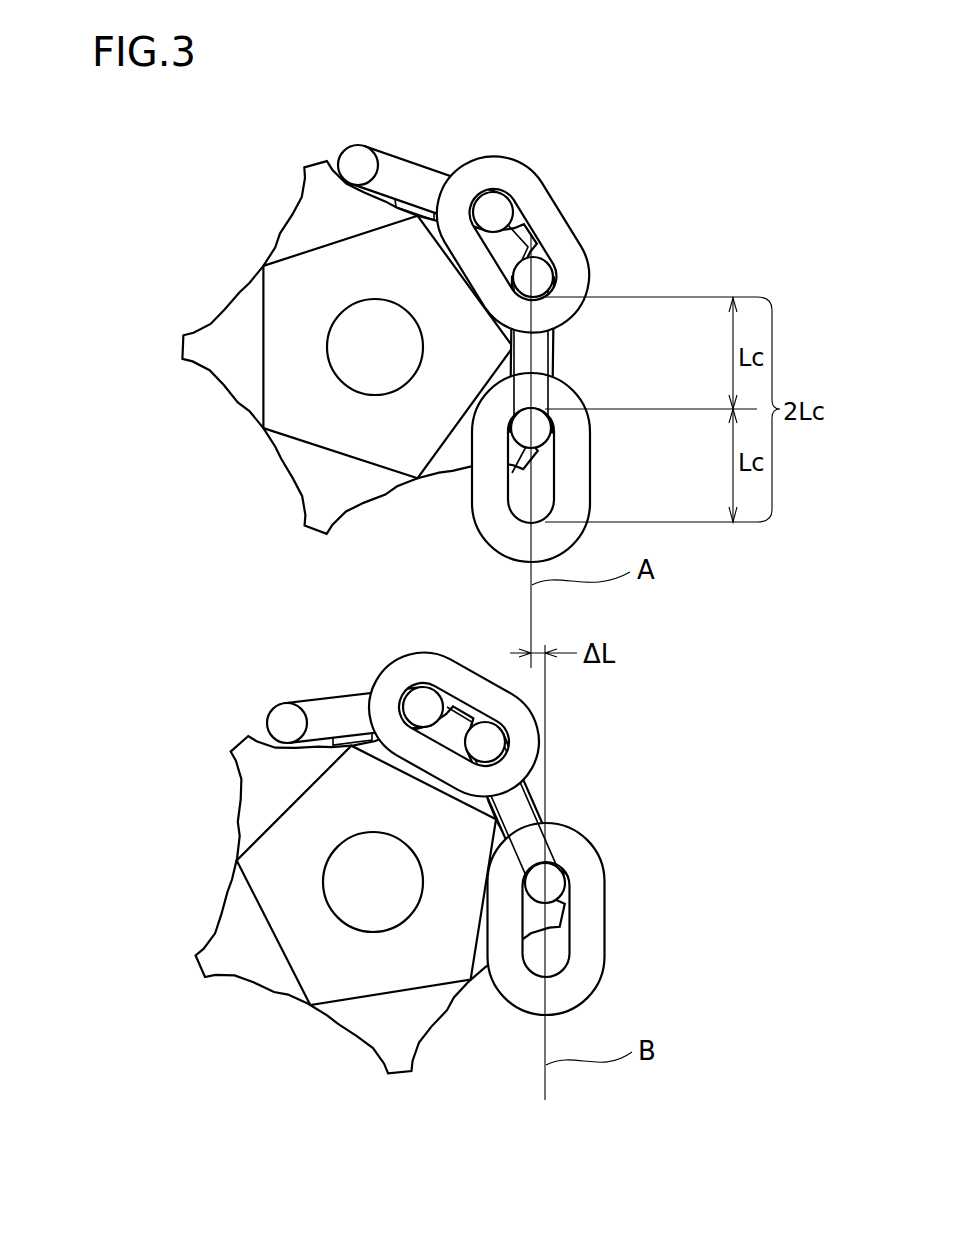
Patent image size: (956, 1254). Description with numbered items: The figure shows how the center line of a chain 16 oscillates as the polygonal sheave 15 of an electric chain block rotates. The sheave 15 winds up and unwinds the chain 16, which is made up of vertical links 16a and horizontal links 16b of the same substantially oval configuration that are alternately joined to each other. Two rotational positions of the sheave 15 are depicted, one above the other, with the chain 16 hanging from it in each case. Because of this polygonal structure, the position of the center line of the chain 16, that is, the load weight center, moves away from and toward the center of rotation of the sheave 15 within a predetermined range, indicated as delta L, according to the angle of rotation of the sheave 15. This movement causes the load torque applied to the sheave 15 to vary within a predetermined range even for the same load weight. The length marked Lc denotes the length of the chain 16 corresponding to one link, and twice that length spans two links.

The polygonal sheave 15 is at (297, 310).
The chain 16 is at (610, 255).
The vertical links 16a is at (548, 210).
The horizontal links 16b is at (360, 152).